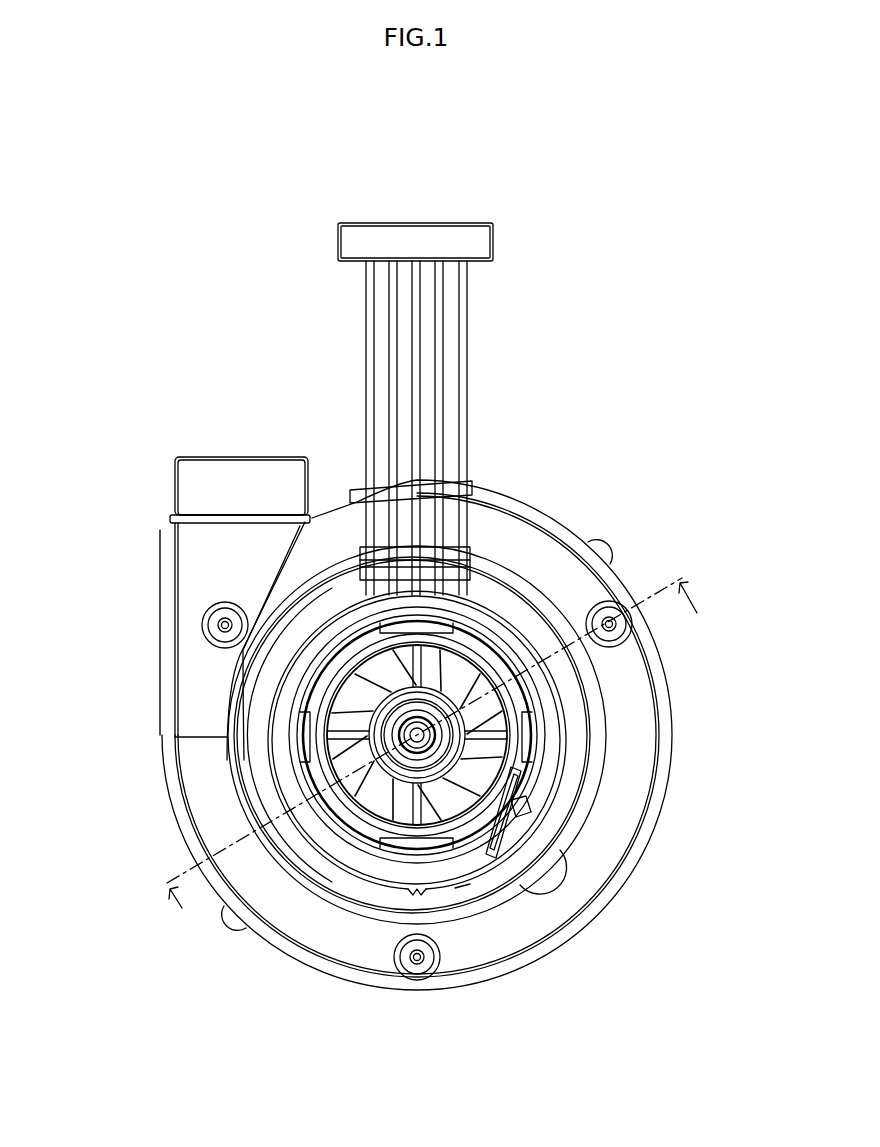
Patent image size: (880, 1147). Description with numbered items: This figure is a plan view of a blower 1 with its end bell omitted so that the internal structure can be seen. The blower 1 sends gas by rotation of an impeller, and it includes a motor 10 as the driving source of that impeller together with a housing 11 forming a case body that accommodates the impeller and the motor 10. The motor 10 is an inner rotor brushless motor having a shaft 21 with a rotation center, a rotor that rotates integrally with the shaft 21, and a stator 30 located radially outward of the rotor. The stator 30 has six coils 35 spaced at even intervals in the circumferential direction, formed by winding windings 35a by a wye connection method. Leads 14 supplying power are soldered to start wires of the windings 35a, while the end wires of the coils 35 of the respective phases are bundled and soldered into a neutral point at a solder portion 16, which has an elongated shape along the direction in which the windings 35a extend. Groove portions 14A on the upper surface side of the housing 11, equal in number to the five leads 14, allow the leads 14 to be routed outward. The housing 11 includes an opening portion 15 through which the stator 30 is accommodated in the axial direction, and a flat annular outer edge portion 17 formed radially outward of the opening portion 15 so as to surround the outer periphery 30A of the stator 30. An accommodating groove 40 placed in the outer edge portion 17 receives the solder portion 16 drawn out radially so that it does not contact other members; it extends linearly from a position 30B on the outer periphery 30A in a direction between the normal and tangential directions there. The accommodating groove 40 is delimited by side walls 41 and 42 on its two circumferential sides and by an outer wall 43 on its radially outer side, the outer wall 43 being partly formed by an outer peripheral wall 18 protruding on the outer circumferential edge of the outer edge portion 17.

The blower 1 is at (599, 372).
The motor 10 is at (513, 614).
The blower housing 11 is at (157, 588).
The leads 14 is at (366, 344).
The groove portions 14A is at (465, 560).
The opening portion 15 is at (353, 828).
The solder portion 16 is at (493, 852).
The outer edge portion 17 is at (440, 870).
The outer peripheral wall 18 is at (400, 889).
The shaft 21 is at (300, 736).
The stator 30 is at (300, 778).
The outer periphery 30A is at (373, 852).
The position 30B is at (515, 810).
The coils 35 is at (493, 733).
The windings 35a is at (470, 772).
The accommodating groove 40 is at (522, 848).
The side wall 41 is at (468, 887).
The side wall 42 is at (523, 822).
The outer wall 43 is at (540, 856).